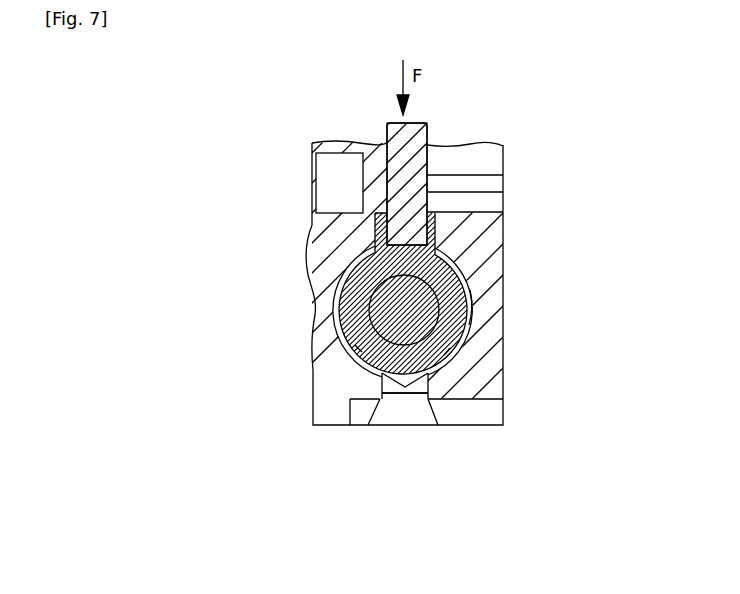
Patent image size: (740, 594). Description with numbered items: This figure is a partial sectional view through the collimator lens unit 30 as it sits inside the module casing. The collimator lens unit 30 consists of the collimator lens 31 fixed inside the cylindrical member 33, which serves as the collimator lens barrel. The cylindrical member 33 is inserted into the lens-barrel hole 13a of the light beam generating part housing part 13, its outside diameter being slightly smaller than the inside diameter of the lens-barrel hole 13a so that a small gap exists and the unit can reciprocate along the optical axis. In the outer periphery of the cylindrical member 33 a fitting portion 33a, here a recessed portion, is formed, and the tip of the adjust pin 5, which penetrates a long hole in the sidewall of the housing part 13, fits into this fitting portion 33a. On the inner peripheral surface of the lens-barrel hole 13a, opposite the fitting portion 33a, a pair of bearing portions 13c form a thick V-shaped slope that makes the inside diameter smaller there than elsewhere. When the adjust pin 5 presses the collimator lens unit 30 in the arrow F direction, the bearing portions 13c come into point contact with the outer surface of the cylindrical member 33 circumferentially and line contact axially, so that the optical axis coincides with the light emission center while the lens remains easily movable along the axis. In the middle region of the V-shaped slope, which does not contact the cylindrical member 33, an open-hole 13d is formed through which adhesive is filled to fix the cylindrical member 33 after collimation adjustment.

The adjust pin 5 is at (400, 147).
The light beam generating part housing part 13 is at (483, 250).
The lens-barrel hole 13a is at (470, 309).
The bearing portions 13c is at (352, 338).
The open-hole 13d is at (392, 386).
The collimator lens unit 30 is at (335, 308).
The collimator lens 31 is at (470, 278).
The cylindrical member 33 is at (356, 272).
The fitting portion 33a is at (427, 218).